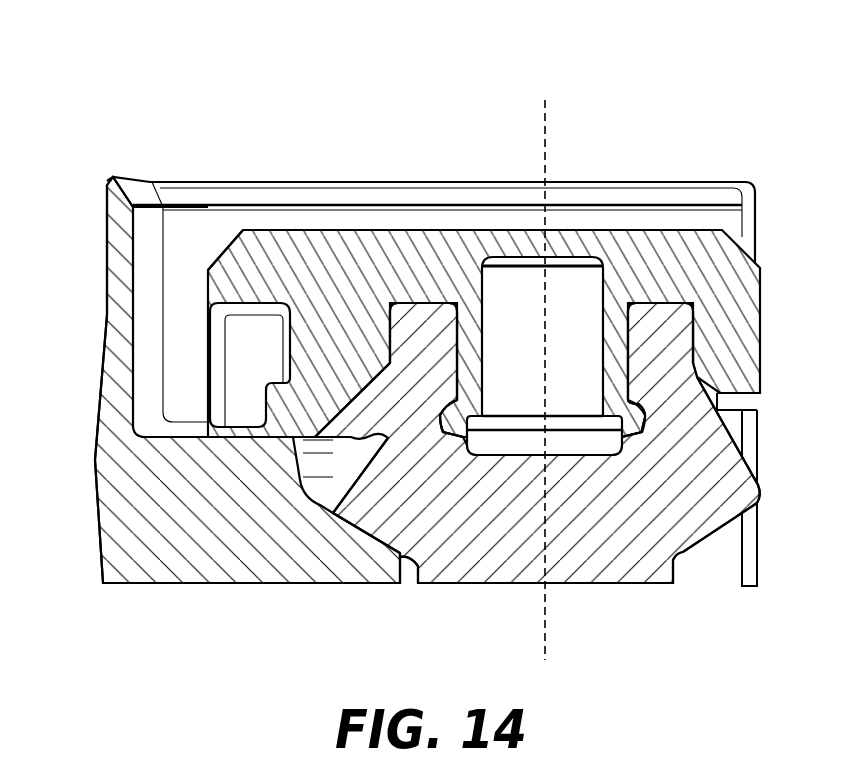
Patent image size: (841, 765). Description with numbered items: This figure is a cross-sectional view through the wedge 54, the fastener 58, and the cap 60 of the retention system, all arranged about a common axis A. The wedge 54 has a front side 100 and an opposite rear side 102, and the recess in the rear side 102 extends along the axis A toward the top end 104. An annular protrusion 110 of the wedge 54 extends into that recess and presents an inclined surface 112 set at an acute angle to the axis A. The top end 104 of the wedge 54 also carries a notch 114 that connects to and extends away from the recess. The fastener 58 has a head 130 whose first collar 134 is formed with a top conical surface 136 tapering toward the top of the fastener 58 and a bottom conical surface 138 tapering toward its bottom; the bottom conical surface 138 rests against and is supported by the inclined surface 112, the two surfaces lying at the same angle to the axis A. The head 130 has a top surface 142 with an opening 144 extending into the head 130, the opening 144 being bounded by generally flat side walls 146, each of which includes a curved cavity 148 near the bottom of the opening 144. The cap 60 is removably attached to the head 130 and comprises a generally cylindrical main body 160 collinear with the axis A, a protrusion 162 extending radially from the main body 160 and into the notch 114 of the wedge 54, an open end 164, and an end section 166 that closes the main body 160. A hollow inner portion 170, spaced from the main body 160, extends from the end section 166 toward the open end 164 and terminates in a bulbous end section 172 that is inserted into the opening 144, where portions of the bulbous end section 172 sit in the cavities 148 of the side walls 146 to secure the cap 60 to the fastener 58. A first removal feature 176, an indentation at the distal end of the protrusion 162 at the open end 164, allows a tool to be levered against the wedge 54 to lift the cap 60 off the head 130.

The wedge 54 is at (109, 169).
The fastener 58 is at (687, 563).
The cap 60 is at (360, 220).
The front side 100 is at (105, 228).
The rear side 102 is at (757, 222).
The top end 104 is at (572, 180).
The annular protrusion 110 is at (419, 582).
The inclined surface 112 is at (335, 515).
The notch 114 is at (185, 235).
The head 130 is at (770, 481).
The first collar 134 is at (768, 506).
The top conical surface 136 is at (368, 447).
The bottom conical surface 138 is at (354, 521).
The top surface 142 is at (430, 302).
The opening 144 is at (527, 456).
The side walls 146 is at (452, 362).
The cavity 148 is at (438, 437).
The main body 160 is at (653, 228).
The protrusion 162 is at (213, 258).
The open end 164 is at (746, 406).
The end section 166 is at (452, 220).
The inner portion 170 is at (639, 350).
The bulbous end section 172 is at (641, 440).
The first removal feature 176 is at (230, 306).
The axis A is at (543, 122).